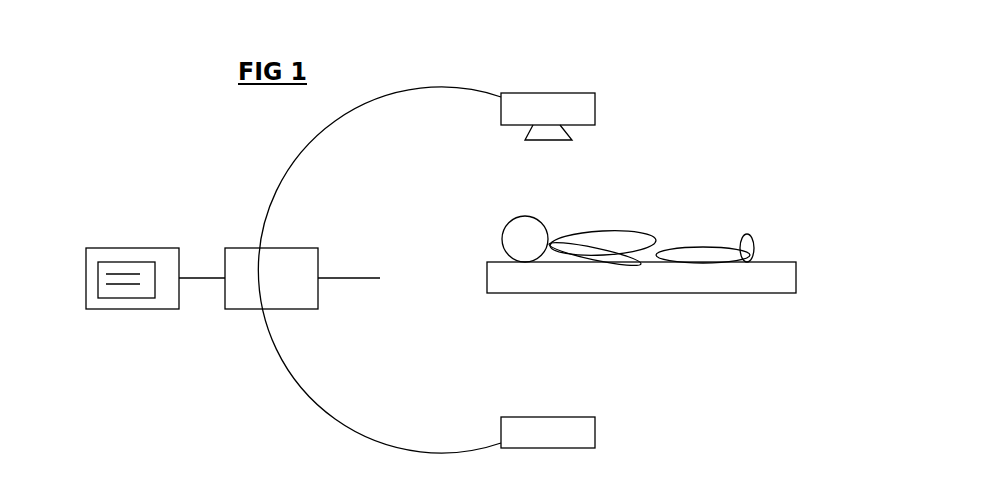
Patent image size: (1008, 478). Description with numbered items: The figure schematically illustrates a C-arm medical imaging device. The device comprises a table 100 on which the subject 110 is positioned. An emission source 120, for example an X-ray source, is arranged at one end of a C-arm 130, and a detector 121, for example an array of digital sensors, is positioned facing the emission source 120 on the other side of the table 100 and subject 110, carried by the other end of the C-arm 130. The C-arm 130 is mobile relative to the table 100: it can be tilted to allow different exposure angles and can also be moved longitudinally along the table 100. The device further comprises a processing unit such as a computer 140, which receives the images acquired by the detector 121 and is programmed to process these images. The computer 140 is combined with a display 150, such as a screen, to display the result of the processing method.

The table 100 is at (780, 262).
The subject 110 is at (623, 233).
The emission source 120 is at (591, 124).
The detector 121 is at (595, 431).
The C-arm 130 is at (409, 168).
The computer 140 is at (260, 248).
The display 150 is at (108, 248).